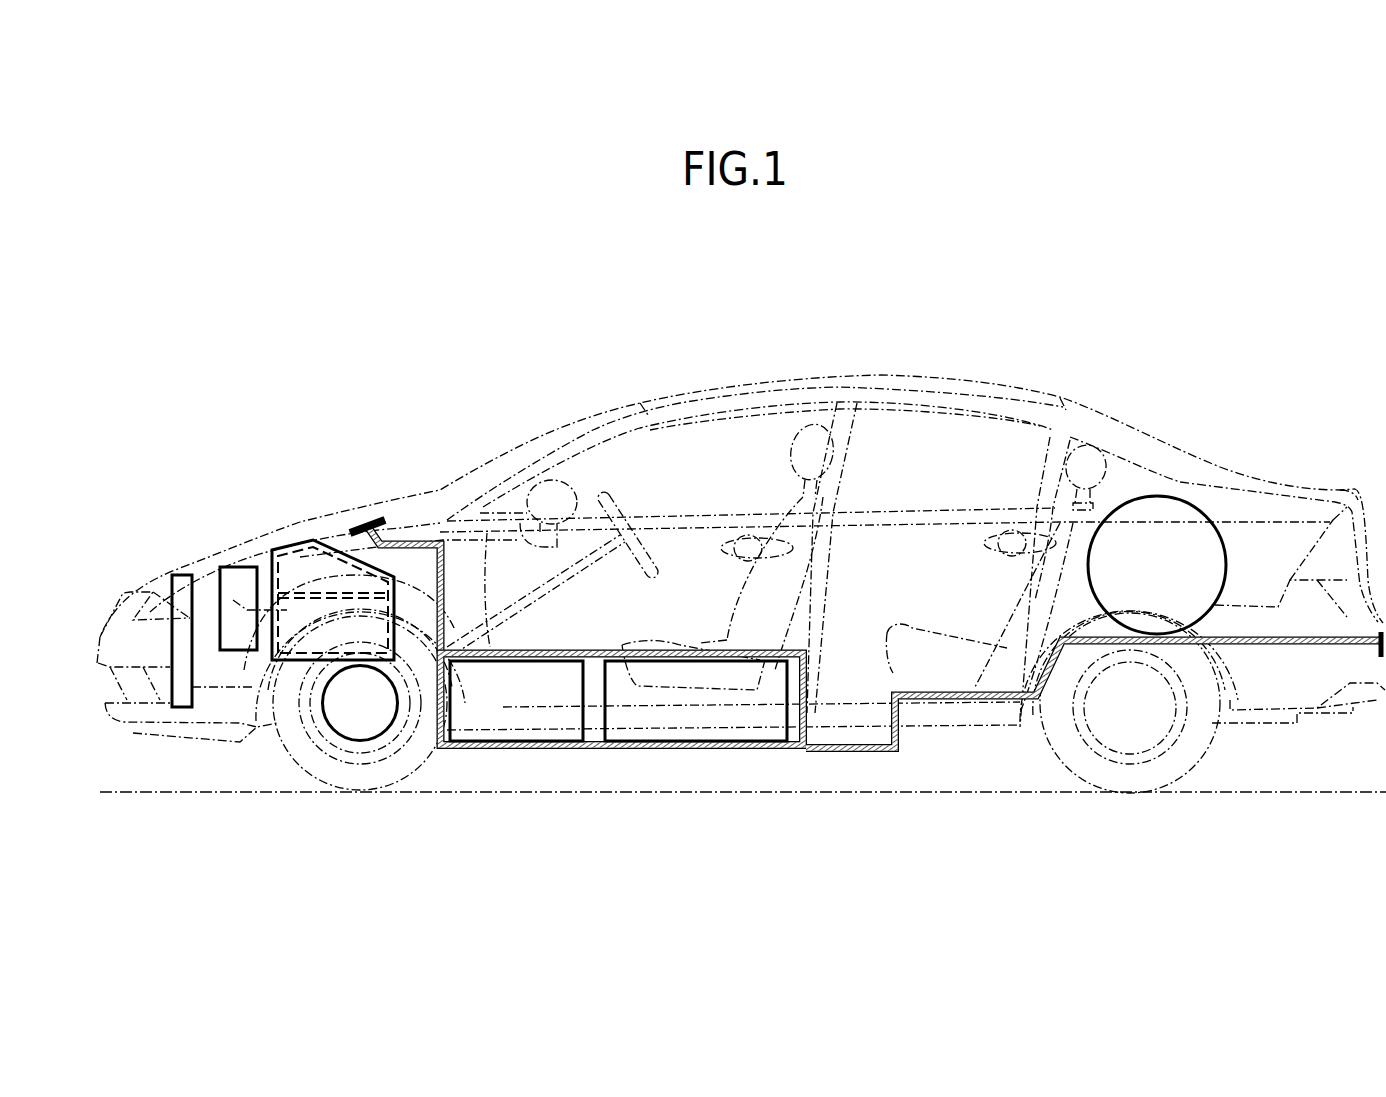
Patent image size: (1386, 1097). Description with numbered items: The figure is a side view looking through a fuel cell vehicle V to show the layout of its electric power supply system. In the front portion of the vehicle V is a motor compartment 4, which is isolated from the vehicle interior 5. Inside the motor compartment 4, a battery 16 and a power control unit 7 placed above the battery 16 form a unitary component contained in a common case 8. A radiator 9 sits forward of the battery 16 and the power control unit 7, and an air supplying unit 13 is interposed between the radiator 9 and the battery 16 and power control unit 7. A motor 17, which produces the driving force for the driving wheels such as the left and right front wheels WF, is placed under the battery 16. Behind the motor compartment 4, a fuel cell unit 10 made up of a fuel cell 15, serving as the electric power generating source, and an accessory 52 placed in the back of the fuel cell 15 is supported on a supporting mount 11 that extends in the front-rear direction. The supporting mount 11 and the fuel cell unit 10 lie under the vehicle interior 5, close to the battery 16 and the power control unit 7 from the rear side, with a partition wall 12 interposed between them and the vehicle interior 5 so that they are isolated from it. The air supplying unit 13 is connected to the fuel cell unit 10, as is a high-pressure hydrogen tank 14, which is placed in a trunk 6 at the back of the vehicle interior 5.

The vehicle V is at (887, 375).
The motor compartment 4 is at (415, 563).
The vehicle interior 5 is at (684, 613).
The trunk 6 is at (1265, 583).
The power control unit 7 is at (313, 537).
The common case 8 is at (283, 550).
The radiator 9 is at (180, 583).
The fuel cell unit 10 is at (618, 767).
The supporting mount 11 is at (703, 750).
The partition wall 12 is at (790, 643).
The air supplying unit 13 is at (227, 562).
The high-pressure hydrogen tank 14 is at (1158, 507).
The fuel cell 15 is at (557, 733).
The battery 16 is at (280, 727).
The motor 17 is at (366, 722).
The accessory 52 is at (650, 737).
The front wheels WF is at (427, 760).